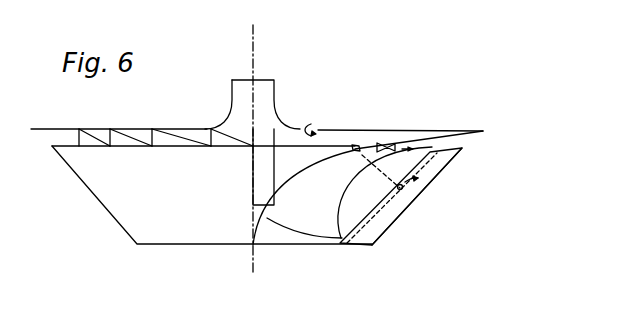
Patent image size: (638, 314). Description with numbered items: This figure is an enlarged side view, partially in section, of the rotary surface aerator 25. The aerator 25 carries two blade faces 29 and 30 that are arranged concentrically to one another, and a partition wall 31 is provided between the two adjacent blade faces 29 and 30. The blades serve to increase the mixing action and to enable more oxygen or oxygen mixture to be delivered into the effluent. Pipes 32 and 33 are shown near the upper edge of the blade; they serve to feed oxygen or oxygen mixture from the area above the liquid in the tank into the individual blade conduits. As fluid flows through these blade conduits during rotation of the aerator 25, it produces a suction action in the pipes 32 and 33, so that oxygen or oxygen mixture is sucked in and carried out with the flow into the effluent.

The rotary surface aerator 25 is at (203, 236).
The blade face 29 is at (304, 238).
The blade face 30 is at (357, 246).
The partition wall 31 is at (383, 202).
The pipe 32 is at (357, 144).
The pipe 33 is at (392, 145).